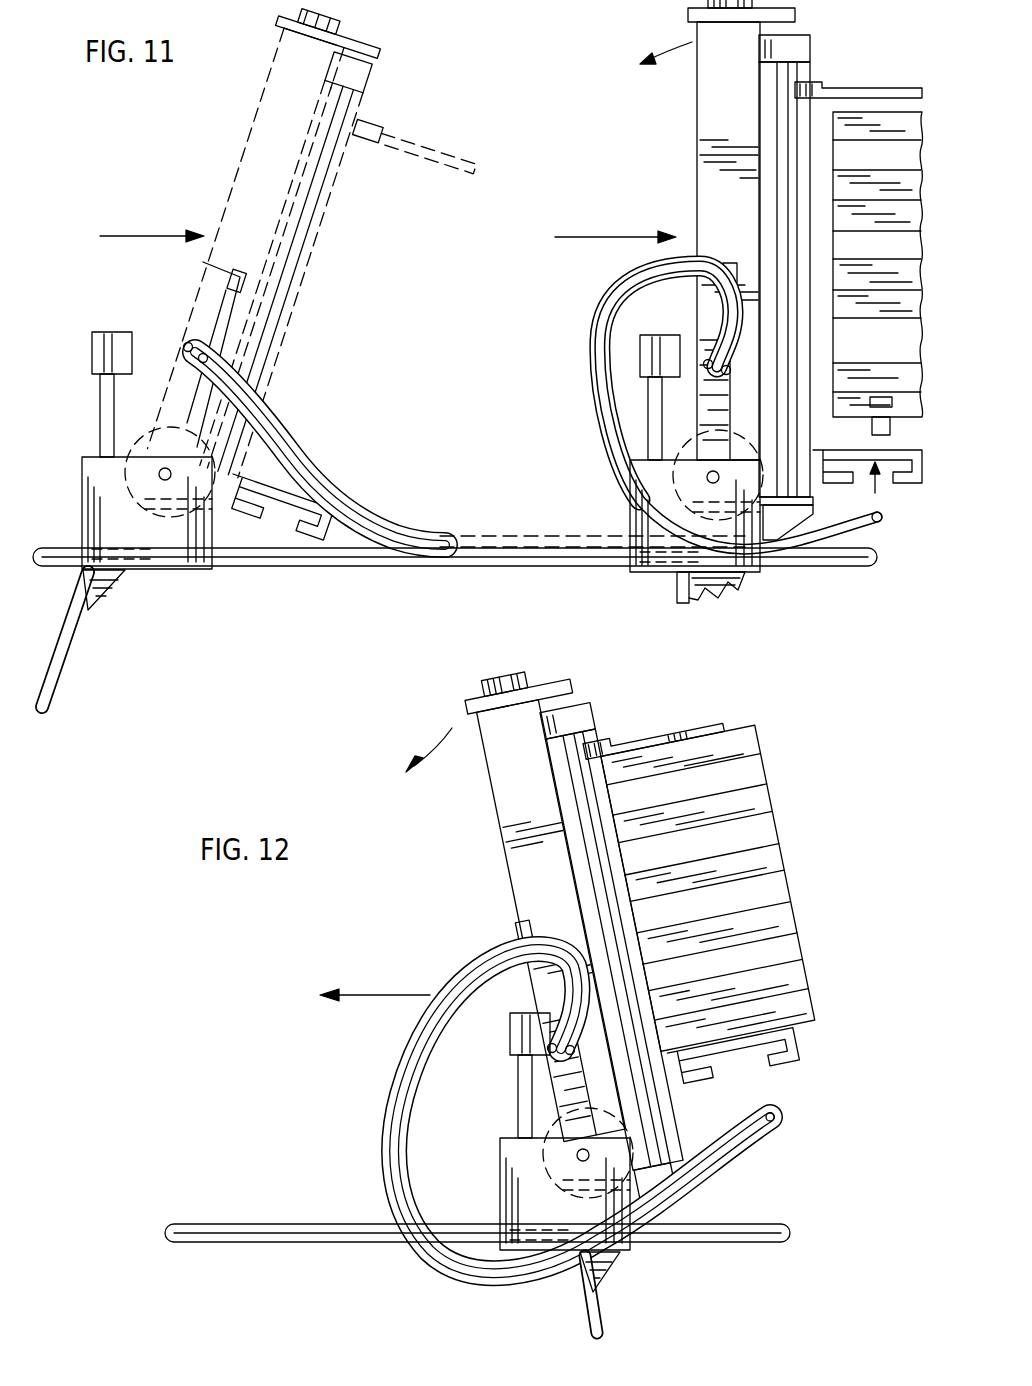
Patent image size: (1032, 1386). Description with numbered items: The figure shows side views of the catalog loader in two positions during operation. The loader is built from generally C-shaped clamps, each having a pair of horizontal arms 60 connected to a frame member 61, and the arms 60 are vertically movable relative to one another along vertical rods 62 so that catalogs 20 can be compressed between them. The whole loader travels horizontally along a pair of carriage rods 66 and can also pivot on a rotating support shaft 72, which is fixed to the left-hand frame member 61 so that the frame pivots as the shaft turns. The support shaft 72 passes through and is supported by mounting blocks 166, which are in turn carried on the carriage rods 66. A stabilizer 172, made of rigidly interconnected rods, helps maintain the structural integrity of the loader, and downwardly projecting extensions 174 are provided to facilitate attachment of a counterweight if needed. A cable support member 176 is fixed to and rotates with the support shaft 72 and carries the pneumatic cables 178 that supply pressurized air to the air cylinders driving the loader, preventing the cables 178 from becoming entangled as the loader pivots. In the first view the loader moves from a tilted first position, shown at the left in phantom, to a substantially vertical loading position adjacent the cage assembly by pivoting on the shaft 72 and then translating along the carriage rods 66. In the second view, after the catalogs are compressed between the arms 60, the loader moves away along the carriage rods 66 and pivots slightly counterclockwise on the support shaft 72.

In FIG. 11, the ink cartridge 20 is at (876, 167).
In FIG. 12, the ink cartridge 20 is at (755, 780).
In FIG. 11, the horizontal arms 60 is at (850, 90).
In FIG. 12, the horizontal arms 60 is at (690, 722).
In FIG. 11, the frame members 61 is at (712, 103).
In FIG. 12, the frame members 61 is at (462, 700).
In FIG. 11, the vertical rods 62 is at (808, 78).
In FIG. 12, the vertical rods 62 is at (595, 735).
In FIG. 11, the horizontal carriage rods 66 is at (832, 567).
In FIG. 12, the horizontal carriage rods 66 is at (325, 1224).
In FIG. 11, the rotating support shaft 72 is at (162, 466).
In FIG. 12, the rotating support shaft 72 is at (576, 1155).
In FIG. 11, the mounting blocks 166 is at (636, 512).
In FIG. 12, the mounting blocks 166 is at (503, 1192).
In FIG. 11, the stabilizer 172 is at (108, 325).
In FIG. 12, the stabilizer 172 is at (510, 1048).
In FIG. 11, the downwardly projecting extensions 174 is at (610, 334).
In FIG. 12, the downwardly projecting extensions 174 is at (600, 1292).
In FIG. 11, the cable support member 176 is at (730, 262).
In FIG. 12, the cable support member 176 is at (516, 926).
In FIG. 11, the pneumatic lines or cables 178 is at (322, 478).
In FIG. 12, the pneumatic lines or cables 178 is at (396, 1084).